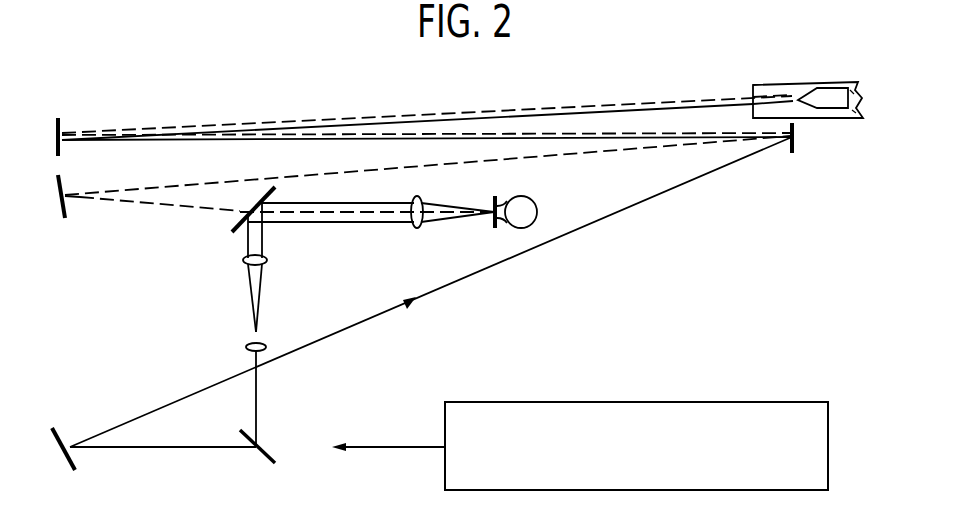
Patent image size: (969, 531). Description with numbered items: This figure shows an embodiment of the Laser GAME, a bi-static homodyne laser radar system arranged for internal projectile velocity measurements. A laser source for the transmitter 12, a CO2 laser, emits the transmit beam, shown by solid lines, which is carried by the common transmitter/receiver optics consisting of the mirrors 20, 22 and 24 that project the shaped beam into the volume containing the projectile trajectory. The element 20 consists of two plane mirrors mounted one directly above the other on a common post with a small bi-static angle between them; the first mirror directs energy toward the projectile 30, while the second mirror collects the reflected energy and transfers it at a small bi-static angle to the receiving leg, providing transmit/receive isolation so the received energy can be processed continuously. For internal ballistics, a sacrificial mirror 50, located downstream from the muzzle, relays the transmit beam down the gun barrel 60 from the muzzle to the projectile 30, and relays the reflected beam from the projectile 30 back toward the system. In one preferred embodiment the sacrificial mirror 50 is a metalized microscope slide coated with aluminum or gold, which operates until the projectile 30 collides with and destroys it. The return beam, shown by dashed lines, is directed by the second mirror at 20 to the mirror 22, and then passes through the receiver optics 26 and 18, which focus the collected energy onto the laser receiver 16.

The laser source for the transmitter 12 is at (742, 402).
The laser receiver 16 is at (536, 207).
The receiver optics 18 is at (421, 226).
The common transmitter/receiver optics 20 is at (795, 149).
The common transmitter/receiver optics mirror 22 is at (66, 212).
The common transmitter/receiver optics mirror 24 is at (76, 458).
The receiver optics 26 is at (232, 228).
The projectile 30 is at (832, 92).
The sacrificial mirror 50 is at (62, 124).
The gun barrel 60 is at (763, 83).